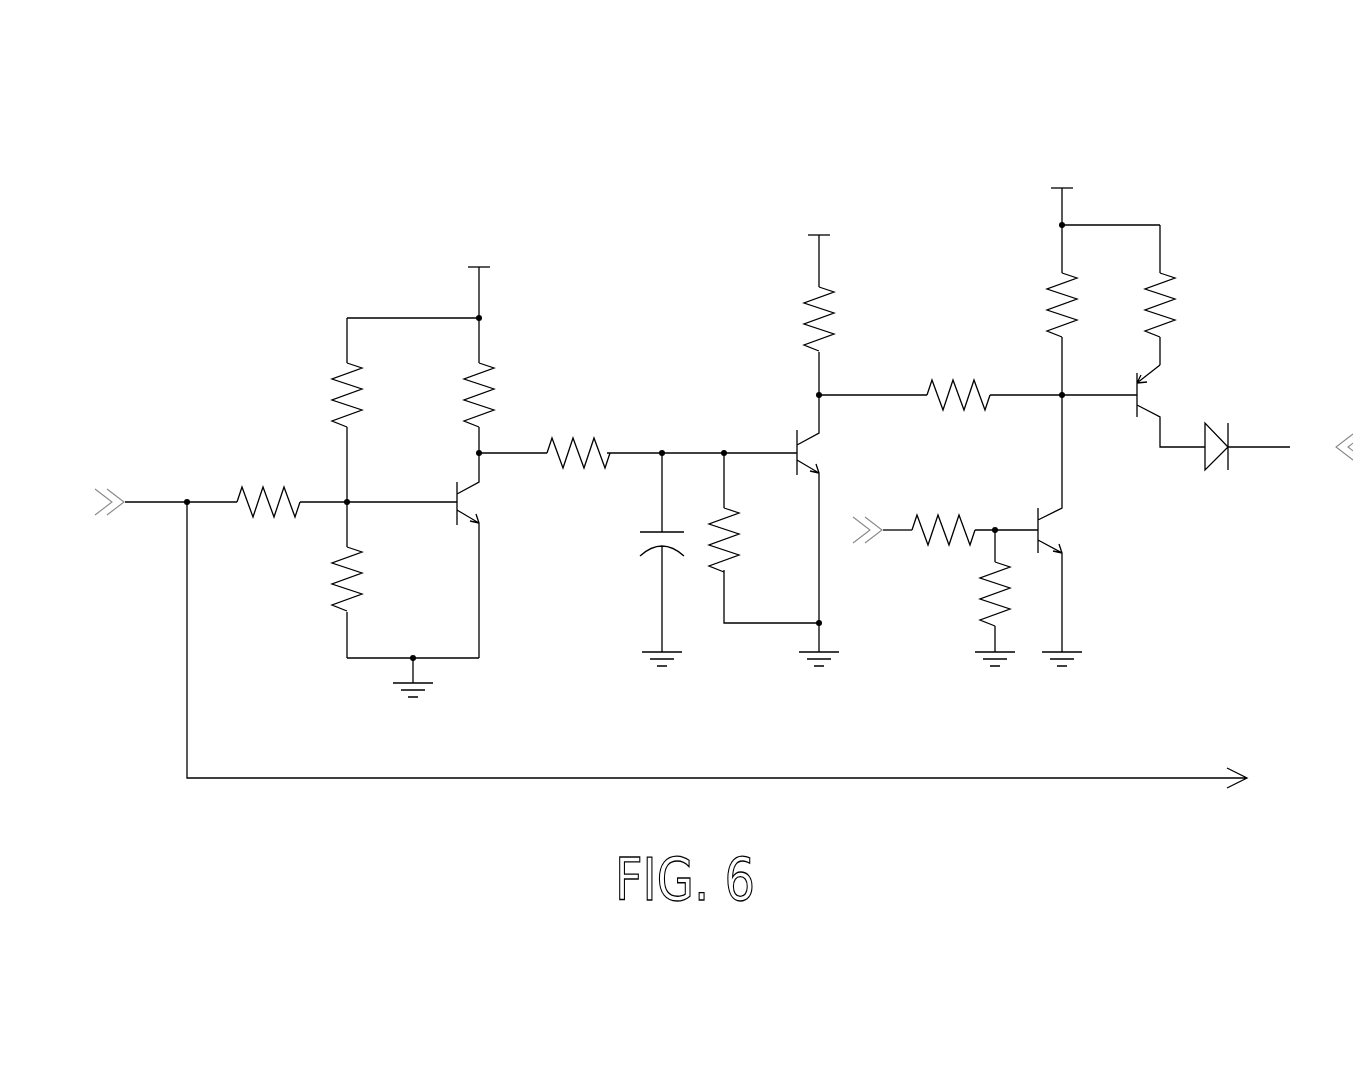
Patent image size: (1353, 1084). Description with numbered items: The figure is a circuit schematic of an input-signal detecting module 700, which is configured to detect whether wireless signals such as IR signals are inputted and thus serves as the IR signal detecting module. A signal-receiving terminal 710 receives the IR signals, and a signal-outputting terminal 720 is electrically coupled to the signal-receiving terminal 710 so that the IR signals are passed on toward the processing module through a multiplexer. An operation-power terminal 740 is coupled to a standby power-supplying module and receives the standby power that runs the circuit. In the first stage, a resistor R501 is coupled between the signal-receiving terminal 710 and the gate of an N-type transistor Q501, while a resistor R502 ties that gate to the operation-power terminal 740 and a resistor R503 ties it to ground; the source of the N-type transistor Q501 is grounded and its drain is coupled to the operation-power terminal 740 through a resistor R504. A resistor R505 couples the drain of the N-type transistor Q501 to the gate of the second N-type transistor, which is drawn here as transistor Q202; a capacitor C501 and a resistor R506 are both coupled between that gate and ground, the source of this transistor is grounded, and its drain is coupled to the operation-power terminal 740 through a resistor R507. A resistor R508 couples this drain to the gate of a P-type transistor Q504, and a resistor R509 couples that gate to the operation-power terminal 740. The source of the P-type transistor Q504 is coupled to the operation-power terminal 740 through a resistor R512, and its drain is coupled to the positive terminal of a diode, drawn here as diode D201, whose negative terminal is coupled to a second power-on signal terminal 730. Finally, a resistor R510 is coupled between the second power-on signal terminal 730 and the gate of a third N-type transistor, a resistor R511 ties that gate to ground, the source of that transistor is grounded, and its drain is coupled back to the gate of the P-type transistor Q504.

The input-signal detecting module 700 is at (720, 158).
The signal-receiving terminal 710 is at (112, 490).
The signal-outputting terminal 720 is at (1142, 775).
The second power-on signal terminal 730 is at (872, 544).
The operation-power terminal 740 is at (487, 266).
The resistor R501 is at (293, 487).
The resistor R502 is at (319, 410).
The resistor R503 is at (319, 580).
The resistor R504 is at (420, 385).
The resistor R505 is at (638, 437).
The resistor R506 is at (765, 538).
The resistor R507 is at (789, 316).
The resistor R508 is at (978, 378).
The resistor R509 is at (1073, 291).
The resistor R510 is at (975, 513).
The resistor R511 is at (969, 598).
The resistor R512 is at (1190, 295).
The capacitor C501 is at (630, 558).
The N-type transistor Q501 is at (440, 575).
The transistor Q202 is at (836, 530).
The P-type transistor Q504 is at (1174, 406).
The diode D201 is at (1241, 463).